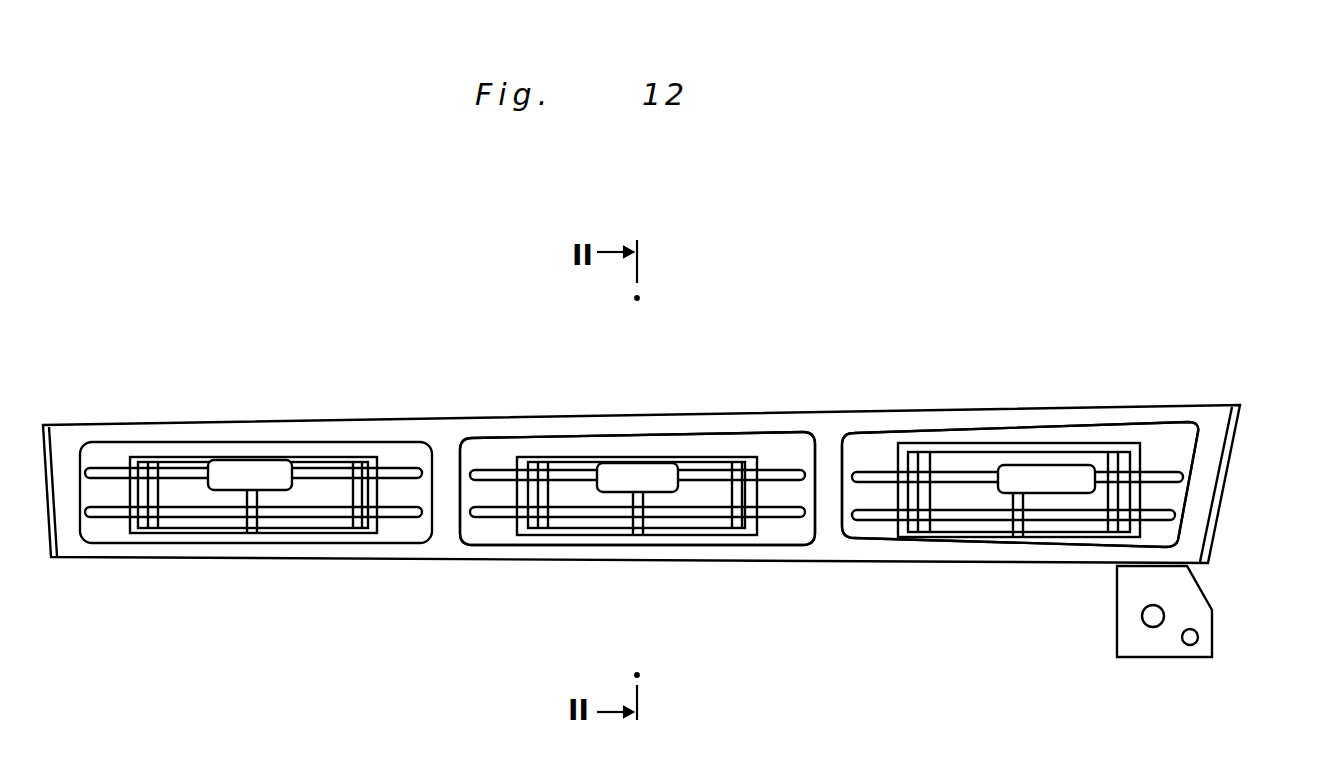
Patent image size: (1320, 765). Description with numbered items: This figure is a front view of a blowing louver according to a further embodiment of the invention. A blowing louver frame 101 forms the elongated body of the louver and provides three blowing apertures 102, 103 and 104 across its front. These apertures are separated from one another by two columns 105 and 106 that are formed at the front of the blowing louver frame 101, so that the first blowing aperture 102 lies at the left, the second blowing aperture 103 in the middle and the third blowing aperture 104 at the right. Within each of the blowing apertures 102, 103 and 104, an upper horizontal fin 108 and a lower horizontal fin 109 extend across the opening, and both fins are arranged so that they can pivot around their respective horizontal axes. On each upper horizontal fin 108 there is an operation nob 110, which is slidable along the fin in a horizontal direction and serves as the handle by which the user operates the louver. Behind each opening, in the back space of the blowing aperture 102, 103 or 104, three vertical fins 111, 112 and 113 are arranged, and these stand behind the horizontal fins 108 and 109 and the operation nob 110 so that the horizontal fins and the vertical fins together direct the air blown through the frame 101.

The blowing louver frame 101 is at (839, 410).
The blowing aperture 102 is at (196, 496).
The blowing aperture 103 is at (594, 503).
The blowing aperture 104 is at (972, 502).
The column 105 is at (461, 487).
The column 106 is at (844, 490).
The upper horizontal fin 108 is at (392, 465).
The lower horizontal fin 109 is at (404, 518).
The operation nob 110 is at (242, 470).
The vertical fin 111 is at (172, 467).
The vertical fin 112 is at (262, 520).
The vertical fin 113 is at (333, 487).